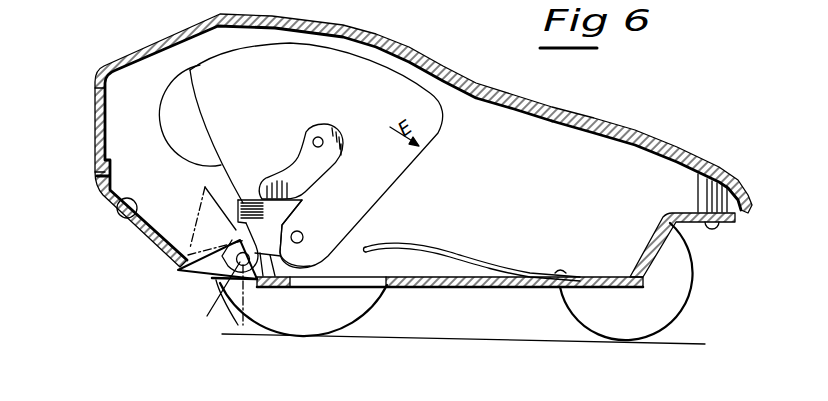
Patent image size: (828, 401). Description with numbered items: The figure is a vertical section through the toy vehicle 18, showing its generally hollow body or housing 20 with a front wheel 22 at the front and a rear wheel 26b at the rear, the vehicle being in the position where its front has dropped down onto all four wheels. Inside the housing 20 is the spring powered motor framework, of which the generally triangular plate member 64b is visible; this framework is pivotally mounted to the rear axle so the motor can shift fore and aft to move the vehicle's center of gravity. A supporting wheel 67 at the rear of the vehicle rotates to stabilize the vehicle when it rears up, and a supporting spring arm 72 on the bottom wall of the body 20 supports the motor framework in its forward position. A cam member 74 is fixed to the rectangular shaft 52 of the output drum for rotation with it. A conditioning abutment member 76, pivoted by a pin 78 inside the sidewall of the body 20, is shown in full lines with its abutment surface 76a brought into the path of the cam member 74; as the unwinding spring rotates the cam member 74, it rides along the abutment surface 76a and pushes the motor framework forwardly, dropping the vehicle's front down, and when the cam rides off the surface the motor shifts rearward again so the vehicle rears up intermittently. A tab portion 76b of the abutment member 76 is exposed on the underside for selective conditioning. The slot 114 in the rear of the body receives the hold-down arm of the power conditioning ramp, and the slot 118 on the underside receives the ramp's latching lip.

The toy vehicle 18 is at (636, 133).
The body or housing 20 is at (414, 50).
The front wheels 22 is at (692, 272).
The rear wheel 26b is at (296, 336).
The rectangular shaft 52 is at (319, 139).
The plate member 64b is at (333, 58).
The supporting wheel 67 is at (114, 221).
The supporting spring arm 72 is at (420, 244).
The cam member 74 is at (320, 167).
The conditioning abutment member 76 is at (286, 211).
The abutment surface 76a is at (253, 198).
The tab portion 76b is at (182, 272).
The pin 78 is at (222, 298).
The slot 114 is at (100, 123).
The slot 118 is at (385, 288).